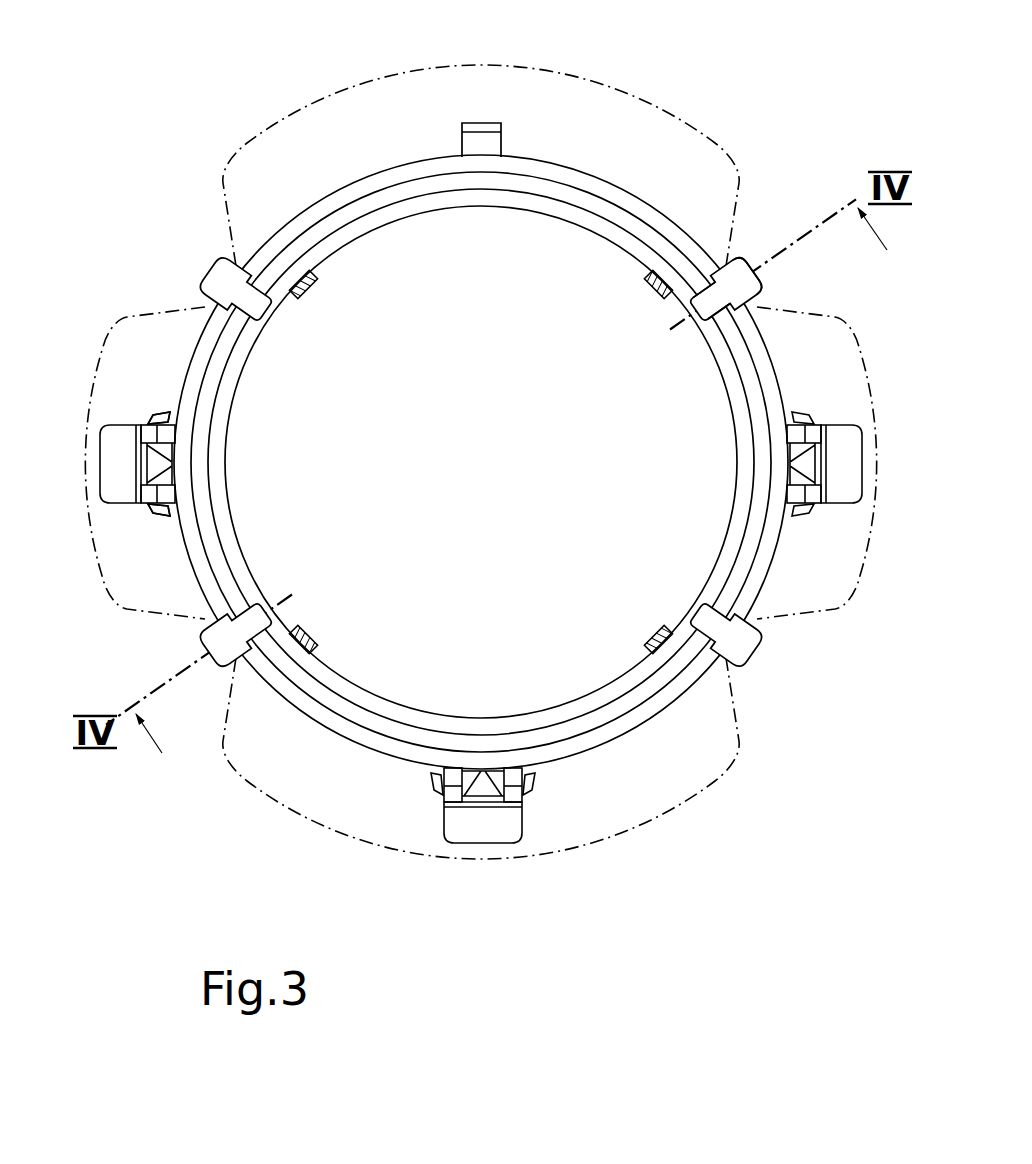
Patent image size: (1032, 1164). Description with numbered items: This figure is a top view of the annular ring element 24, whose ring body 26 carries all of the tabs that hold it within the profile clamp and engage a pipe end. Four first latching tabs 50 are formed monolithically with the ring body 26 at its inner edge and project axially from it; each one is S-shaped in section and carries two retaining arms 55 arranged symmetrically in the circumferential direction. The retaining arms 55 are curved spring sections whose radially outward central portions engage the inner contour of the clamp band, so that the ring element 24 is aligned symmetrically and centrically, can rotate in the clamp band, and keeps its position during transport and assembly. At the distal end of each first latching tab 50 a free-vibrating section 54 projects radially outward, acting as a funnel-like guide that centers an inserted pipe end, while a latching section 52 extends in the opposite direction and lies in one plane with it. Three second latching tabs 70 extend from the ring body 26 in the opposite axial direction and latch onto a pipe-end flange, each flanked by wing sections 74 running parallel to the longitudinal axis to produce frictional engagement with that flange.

The ring element 24 is at (541, 156).
The ring body 26 is at (437, 156).
The first latching tab 50 is at (202, 266).
The latching section 52 is at (703, 287).
The free-vibrating section 54 is at (743, 257).
The retaining arm 55 is at (121, 602).
The second latching tab 70 is at (97, 487).
The wing section 74 is at (153, 417).